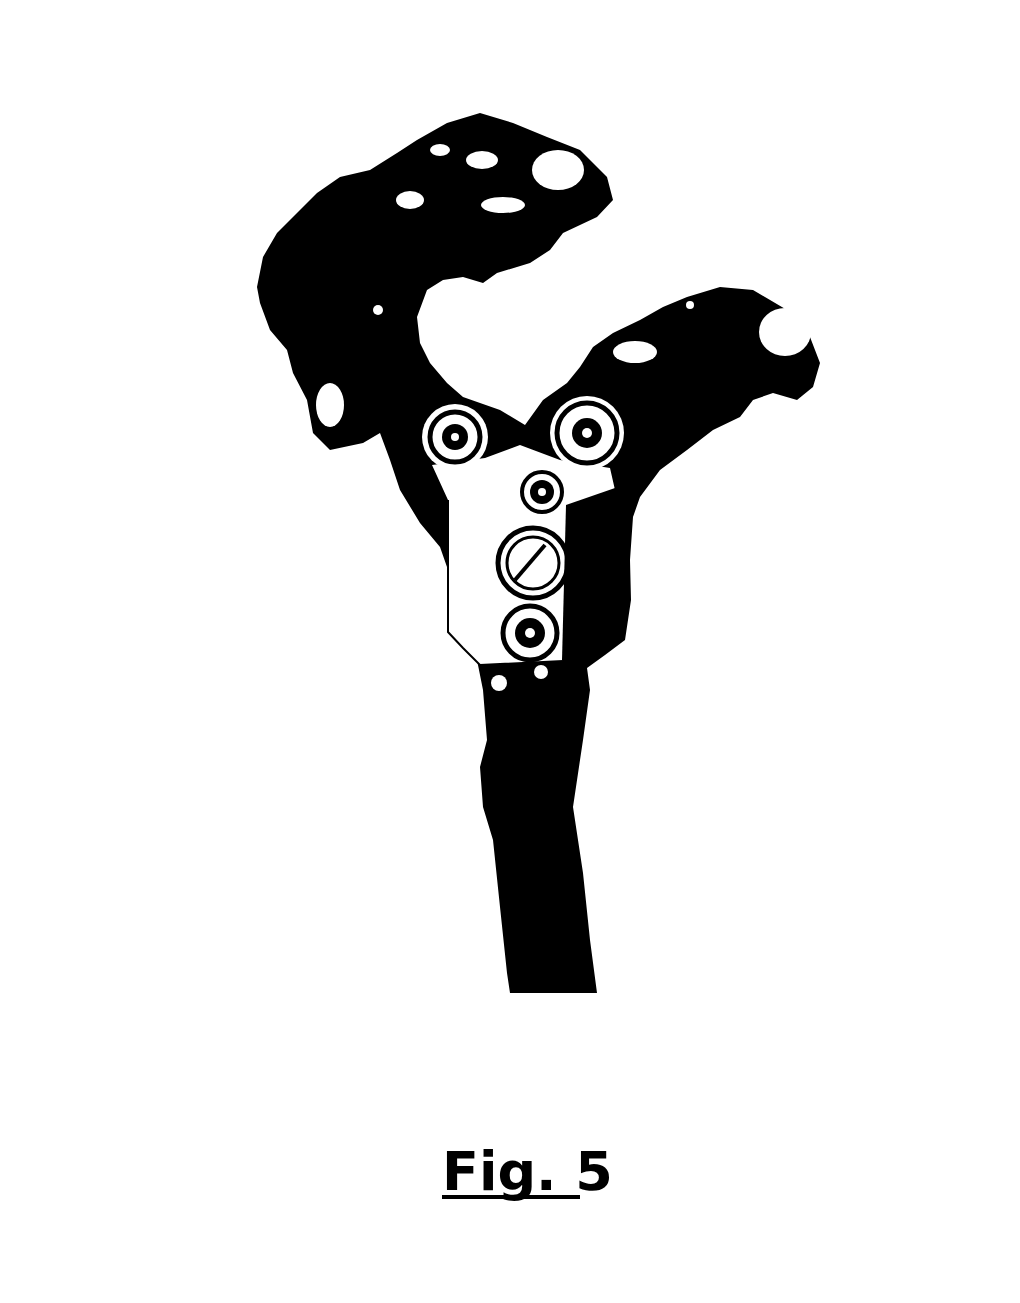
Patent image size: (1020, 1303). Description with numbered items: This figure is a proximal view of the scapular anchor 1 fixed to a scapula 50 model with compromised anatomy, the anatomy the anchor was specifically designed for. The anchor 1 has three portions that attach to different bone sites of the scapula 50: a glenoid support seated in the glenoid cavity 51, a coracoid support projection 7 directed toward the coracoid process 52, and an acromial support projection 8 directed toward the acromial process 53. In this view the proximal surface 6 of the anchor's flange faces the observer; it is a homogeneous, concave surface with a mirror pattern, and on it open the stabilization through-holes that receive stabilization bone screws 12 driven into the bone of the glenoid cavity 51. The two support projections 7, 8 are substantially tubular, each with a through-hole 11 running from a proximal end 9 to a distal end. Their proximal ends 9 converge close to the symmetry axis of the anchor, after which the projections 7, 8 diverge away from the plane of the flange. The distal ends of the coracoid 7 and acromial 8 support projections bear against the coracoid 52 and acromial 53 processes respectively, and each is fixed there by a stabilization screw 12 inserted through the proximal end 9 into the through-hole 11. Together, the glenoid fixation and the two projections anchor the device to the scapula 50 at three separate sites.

The anchor 1 is at (467, 560).
The proximal surface 6 is at (587, 600).
The coracoid support projection 7 is at (667, 446).
The acromial support projection 8 is at (452, 358).
The proximal end 9 is at (460, 477).
The through-hole 11 is at (460, 456).
The stabilization bone screw 12 is at (527, 503).
The scapula 50 is at (477, 528).
The glenoid cavity 51 is at (624, 544).
The coracoid process 52 is at (780, 323).
The acromial process 53 is at (368, 226).